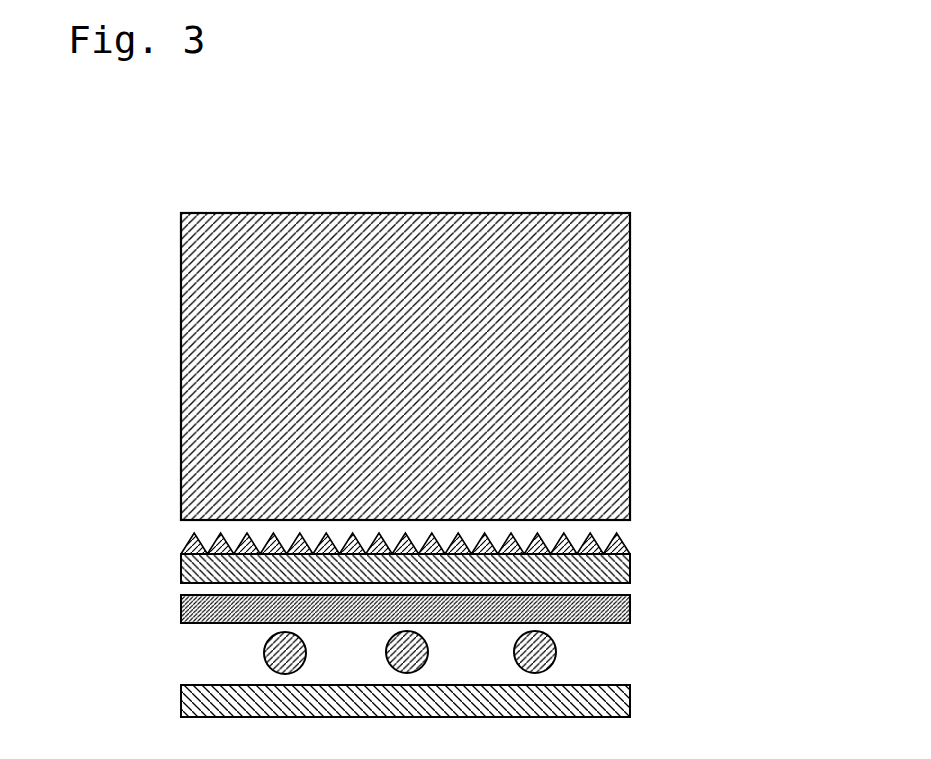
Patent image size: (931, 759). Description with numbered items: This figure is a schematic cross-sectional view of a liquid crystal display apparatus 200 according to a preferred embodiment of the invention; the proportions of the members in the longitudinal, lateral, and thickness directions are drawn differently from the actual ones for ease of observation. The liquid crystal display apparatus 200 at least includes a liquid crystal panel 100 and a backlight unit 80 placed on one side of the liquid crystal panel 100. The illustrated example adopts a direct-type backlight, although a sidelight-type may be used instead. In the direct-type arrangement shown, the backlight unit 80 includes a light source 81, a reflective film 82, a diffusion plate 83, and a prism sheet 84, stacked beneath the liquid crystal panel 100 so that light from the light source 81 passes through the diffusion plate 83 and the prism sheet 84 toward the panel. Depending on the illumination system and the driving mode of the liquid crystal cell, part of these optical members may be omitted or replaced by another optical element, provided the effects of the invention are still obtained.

The liquid crystal display apparatus 200 is at (586, 180).
The liquid crystal panel 100 is at (603, 367).
The backlight unit 80 is at (650, 523).
The prism sheet 84 is at (190, 572).
The diffusion plate 83 is at (190, 610).
The light source 81 is at (278, 654).
The reflective film 82 is at (190, 699).